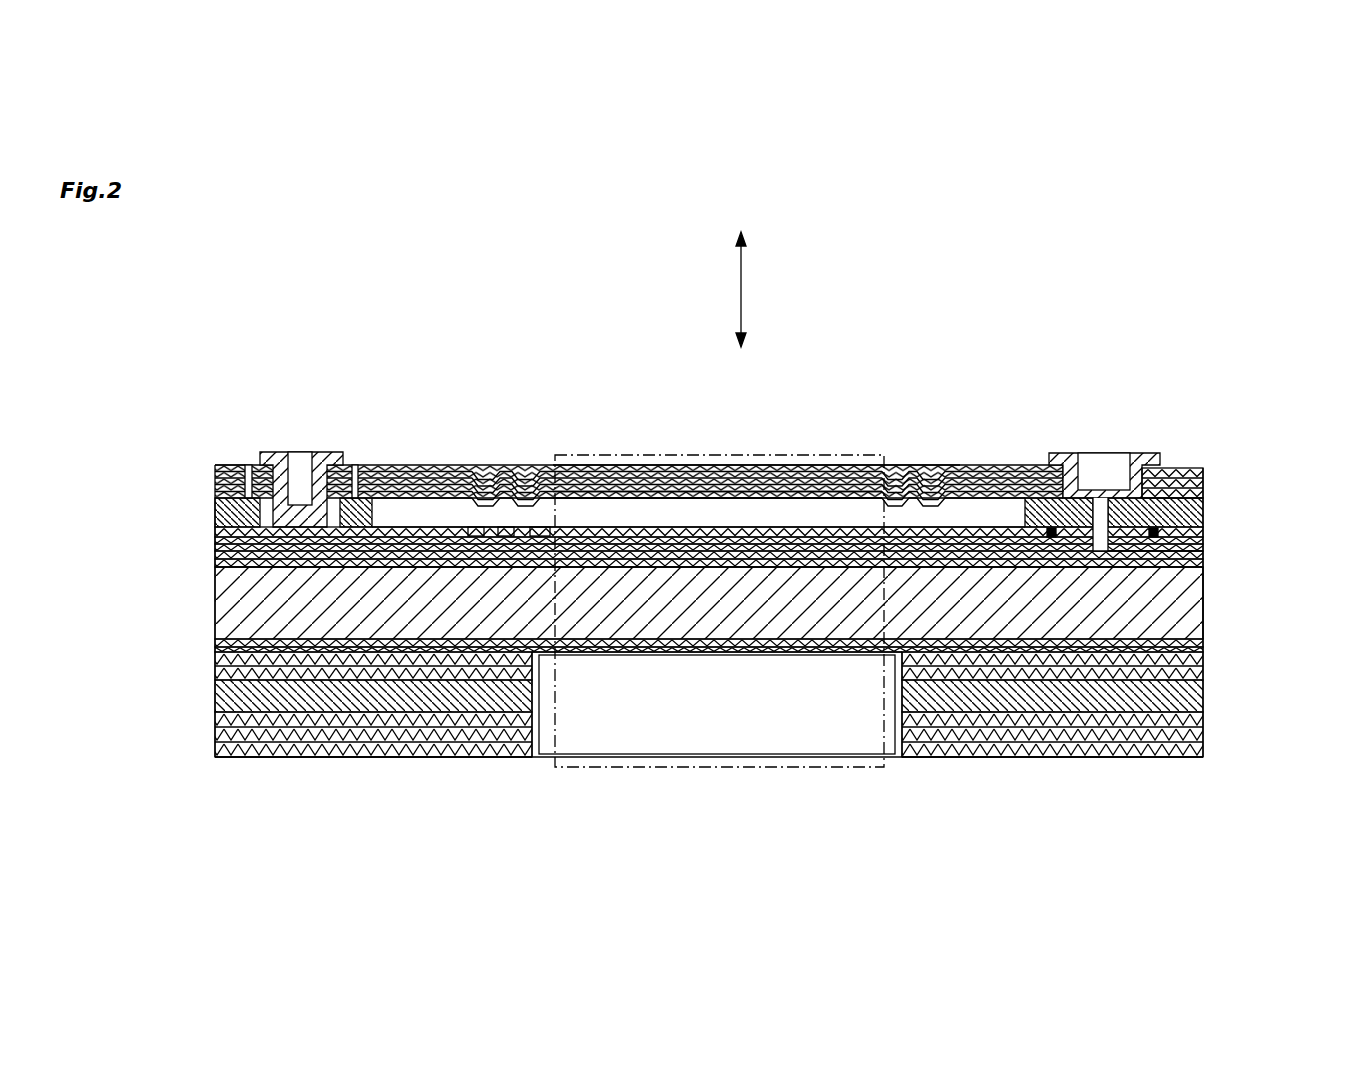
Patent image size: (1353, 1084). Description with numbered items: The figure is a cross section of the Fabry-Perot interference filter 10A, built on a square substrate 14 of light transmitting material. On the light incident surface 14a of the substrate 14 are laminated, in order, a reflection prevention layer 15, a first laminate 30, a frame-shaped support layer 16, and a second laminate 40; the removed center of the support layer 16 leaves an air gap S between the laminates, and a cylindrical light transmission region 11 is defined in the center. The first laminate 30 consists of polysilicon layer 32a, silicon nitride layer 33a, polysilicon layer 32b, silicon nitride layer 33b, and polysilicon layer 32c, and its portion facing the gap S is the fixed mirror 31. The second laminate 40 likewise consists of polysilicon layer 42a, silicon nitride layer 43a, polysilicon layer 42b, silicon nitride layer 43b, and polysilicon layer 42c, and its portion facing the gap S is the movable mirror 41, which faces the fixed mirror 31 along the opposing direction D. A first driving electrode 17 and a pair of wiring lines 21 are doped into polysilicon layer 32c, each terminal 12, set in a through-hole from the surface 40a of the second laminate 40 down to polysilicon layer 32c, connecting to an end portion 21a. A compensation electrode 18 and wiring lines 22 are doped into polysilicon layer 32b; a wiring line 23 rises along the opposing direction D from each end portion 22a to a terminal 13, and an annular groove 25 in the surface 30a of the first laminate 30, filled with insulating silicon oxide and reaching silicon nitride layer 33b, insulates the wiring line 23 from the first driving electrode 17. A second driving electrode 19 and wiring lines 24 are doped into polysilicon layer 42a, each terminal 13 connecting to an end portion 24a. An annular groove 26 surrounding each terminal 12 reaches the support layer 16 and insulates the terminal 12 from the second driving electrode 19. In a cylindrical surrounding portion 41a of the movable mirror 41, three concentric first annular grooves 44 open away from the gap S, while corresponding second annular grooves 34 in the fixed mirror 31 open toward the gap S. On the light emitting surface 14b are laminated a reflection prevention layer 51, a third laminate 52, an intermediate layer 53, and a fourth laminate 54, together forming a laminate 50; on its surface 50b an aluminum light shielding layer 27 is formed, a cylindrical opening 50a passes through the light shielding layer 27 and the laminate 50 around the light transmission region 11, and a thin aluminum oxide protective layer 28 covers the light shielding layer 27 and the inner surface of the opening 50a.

The Fabry-Perot interference filter 10A is at (1106, 283).
The opposing direction D is at (742, 290).
The light transmission region 11 is at (695, 770).
The terminal 12 is at (300, 452).
The terminal 13 is at (1092, 460).
The substrate 14 is at (647, 630).
The surface of the substrate on a light incident side 14a is at (217, 566).
The surface of the substrate on a light emitting side 14b is at (230, 645).
The reflection prevention layer 15 is at (1165, 575).
The support layer 16 is at (1170, 508).
The first driving electrode 17 is at (1002, 528).
The gap S is at (1017, 515).
The compensation electrode 18 is at (612, 540).
The second driving electrode 19 is at (793, 498).
The wiring line 21 is at (345, 527).
The end portion of the wiring line 21a is at (287, 527).
The wiring line 22 is at (1097, 551).
The end portion of the wiring line 22a is at (1117, 538).
The wiring line 23 is at (1147, 540).
The wiring line 24 is at (1043, 498).
The end portion of the wiring line 24a is at (1140, 495).
The annular groove 25 is at (1155, 532).
The annular groove 26 is at (249, 465).
The light shielding layer 27 is at (423, 750).
The protective layer 28 is at (962, 760).
The first laminate 30 is at (779, 546).
The surface of the first laminate 30a is at (1185, 530).
The fixed mirror 31 is at (718, 578).
The polysilicon layer 32a is at (1203, 563).
The polysilicon layer 32b is at (1203, 543).
The polysilicon layer 32c is at (1203, 528).
The silicon nitride layer 33a is at (1203, 555).
The silicon nitride layer 33b is at (1203, 538).
The second annular groove 34 is at (540, 530).
The second laminate 40 is at (563, 511).
The surface of the second laminate 40a is at (223, 465).
The movable mirror 41 is at (694, 464).
The surrounding portion 41a is at (950, 403).
The polysilicon layer 42a is at (583, 523).
The polysilicon layer 42b is at (215, 483).
The polysilicon layer 42c is at (215, 467).
The silicon nitride layer 43a is at (215, 490).
The silicon nitride layer 43b is at (215, 475).
The first annular groove 44 is at (945, 490).
The laminate 50 is at (760, 697).
The opening 50a is at (898, 722).
The surface of the laminate on a light emitting side 50b is at (490, 750).
The reflection prevention layer 51 is at (1206, 650).
The third laminate 52 is at (1209, 657).
The intermediate layer 53 is at (1206, 697).
The fourth laminate 54 is at (733, 734).